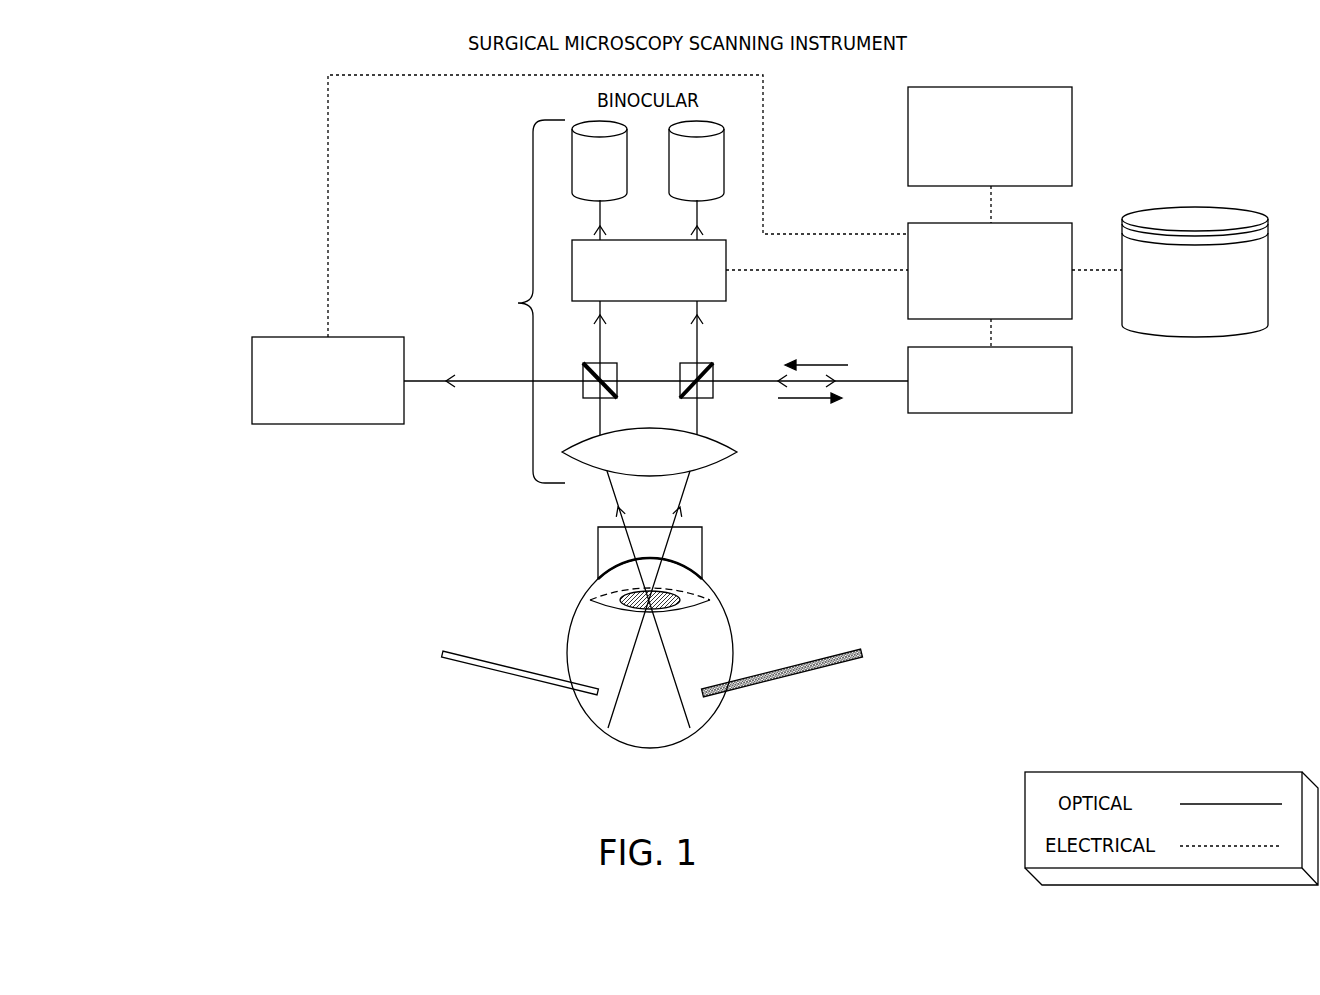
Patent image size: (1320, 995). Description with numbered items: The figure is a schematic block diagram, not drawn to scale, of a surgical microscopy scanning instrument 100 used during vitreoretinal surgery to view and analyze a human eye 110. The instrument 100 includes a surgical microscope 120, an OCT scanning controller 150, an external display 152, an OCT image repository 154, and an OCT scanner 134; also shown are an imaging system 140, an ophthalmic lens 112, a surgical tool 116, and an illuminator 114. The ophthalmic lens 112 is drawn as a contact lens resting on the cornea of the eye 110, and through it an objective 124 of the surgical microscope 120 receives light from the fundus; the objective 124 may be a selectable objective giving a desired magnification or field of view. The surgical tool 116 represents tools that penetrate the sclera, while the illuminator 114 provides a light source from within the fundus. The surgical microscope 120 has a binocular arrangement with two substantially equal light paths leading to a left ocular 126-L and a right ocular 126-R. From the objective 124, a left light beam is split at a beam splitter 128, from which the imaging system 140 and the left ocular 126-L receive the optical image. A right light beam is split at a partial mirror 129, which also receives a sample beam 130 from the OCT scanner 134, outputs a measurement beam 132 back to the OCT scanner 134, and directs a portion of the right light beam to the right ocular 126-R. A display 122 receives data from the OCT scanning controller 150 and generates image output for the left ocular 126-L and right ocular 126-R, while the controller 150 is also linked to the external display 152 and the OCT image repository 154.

The surgical microscopy scanning instrument 100 is at (282, 62).
The eye 110 is at (723, 618).
The ophthalmic lens 112 is at (598, 555).
The illuminator 114 is at (481, 657).
The surgical tool 116 is at (840, 654).
The surgical microscope 120 is at (518, 303).
The display 122 is at (663, 294).
The objective 124 is at (665, 462).
The left ocular 126-L is at (622, 176).
The right ocular 126-R is at (720, 176).
The beam splitter 128 is at (593, 363).
The partial mirror 129 is at (684, 362).
The sample beam 130 is at (830, 364).
The measurement beam 132 is at (806, 399).
The OCT scanner 134 is at (1005, 404).
The imaging system 140 is at (342, 417).
The OCT scanning controller 150 is at (1005, 309).
The external display 152 is at (1005, 174).
The OCT image repository 154 is at (1210, 332).